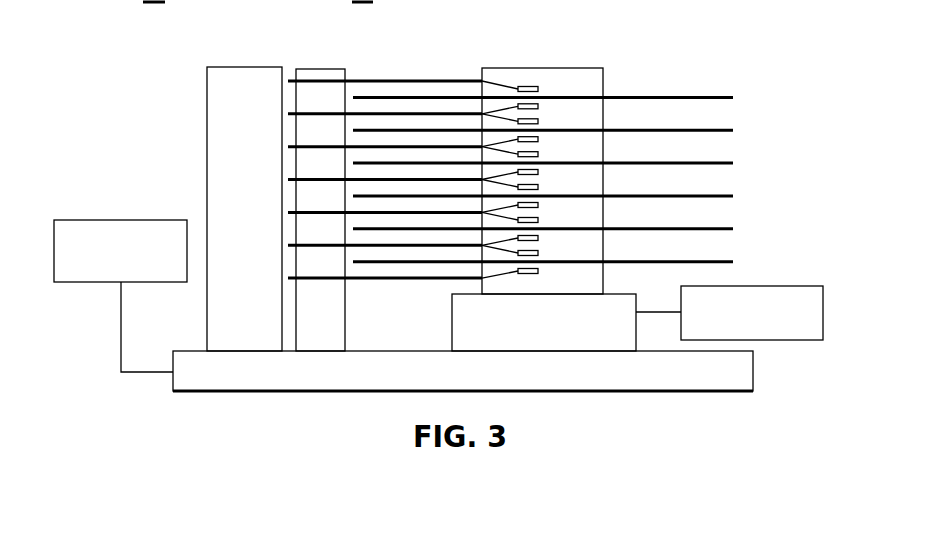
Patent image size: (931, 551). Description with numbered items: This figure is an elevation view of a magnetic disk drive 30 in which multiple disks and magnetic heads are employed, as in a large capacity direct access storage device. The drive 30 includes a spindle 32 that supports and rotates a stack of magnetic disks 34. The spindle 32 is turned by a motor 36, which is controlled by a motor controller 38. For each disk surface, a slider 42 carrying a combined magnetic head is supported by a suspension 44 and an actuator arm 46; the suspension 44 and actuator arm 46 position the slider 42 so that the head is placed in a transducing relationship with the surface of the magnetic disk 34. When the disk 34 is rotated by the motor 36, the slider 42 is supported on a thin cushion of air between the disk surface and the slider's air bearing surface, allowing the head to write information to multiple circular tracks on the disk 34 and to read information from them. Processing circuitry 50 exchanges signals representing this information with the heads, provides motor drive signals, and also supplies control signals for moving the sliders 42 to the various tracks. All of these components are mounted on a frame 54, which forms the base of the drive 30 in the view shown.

The magnetic disk drive 30 is at (676, 70).
The spindle 32 is at (596, 68).
The magnetic disk 34 is at (734, 99).
The motor 36 is at (533, 334).
The motor controller 38 is at (786, 341).
The slider 42 is at (538, 107).
The suspension 44 is at (498, 113).
The actuator arm 46 is at (450, 113).
The processing circuitry 50 is at (95, 220).
The frame 54 is at (222, 391).